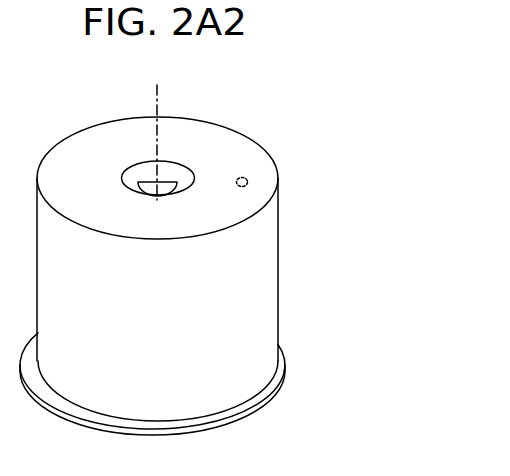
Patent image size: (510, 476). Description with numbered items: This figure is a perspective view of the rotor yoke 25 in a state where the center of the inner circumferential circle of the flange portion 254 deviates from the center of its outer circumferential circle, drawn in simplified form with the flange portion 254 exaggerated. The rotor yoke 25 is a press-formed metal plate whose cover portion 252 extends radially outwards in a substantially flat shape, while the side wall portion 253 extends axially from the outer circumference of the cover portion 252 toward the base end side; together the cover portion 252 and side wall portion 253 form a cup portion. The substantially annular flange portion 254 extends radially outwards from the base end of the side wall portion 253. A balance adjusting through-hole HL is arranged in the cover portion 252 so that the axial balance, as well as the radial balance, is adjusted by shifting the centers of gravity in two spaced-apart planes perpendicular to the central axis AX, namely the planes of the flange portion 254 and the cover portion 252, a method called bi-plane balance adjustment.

The rotor yoke 25 is at (376, 149).
The cover portion 252 is at (228, 148).
The side wall portion 253 is at (281, 260).
The flange portion 254 is at (283, 368).
The balance adjusting through-hole HL is at (247, 180).
The axis AX is at (154, 125).